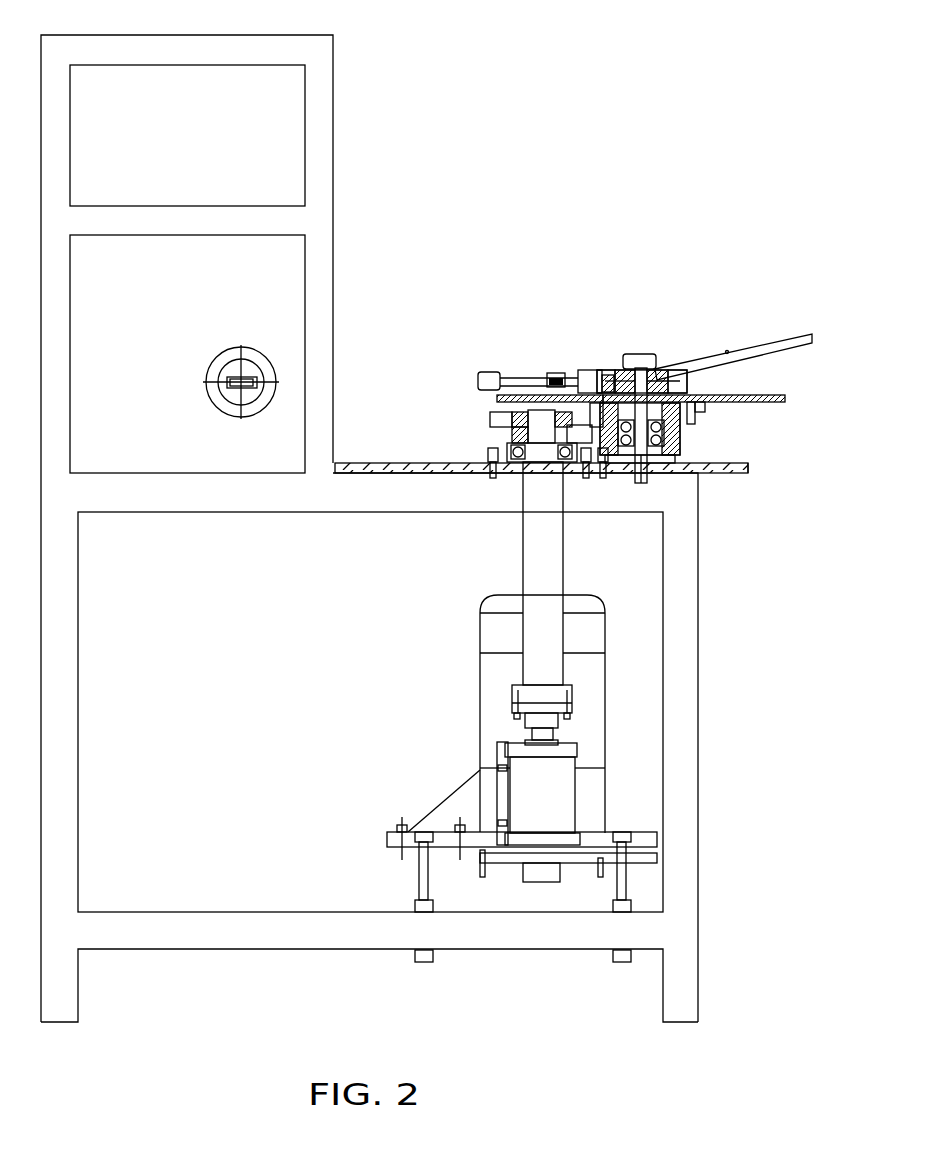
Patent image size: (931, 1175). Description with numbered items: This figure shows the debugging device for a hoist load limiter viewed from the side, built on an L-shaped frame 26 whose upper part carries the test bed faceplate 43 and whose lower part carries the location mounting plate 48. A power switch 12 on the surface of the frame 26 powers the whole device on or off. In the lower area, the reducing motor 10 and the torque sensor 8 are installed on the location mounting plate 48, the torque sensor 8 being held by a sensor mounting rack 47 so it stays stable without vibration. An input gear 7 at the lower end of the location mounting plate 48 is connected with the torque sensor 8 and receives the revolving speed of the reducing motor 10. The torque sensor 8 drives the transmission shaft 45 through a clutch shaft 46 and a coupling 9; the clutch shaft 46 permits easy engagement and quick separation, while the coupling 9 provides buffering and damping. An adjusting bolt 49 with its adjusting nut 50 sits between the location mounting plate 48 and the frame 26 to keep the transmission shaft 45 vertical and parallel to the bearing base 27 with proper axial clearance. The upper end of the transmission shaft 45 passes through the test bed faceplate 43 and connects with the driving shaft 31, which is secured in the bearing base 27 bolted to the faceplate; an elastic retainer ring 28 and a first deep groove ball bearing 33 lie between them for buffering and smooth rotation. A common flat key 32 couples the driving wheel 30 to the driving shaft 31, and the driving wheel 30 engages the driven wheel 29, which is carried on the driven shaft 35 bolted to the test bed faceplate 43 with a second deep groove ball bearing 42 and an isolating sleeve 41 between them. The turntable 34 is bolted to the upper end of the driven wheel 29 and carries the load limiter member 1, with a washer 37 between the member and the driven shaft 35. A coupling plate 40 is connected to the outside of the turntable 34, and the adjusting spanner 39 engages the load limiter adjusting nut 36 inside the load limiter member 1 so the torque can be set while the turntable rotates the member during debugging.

The load limiter member 1 is at (727, 352).
The input gear 7 is at (535, 862).
The torque sensor 8 is at (525, 763).
The coupling 9 is at (548, 697).
The reducing motor 10 is at (483, 652).
The power switch 12 is at (238, 380).
The frame 26 is at (305, 135).
The bearing base 27 is at (490, 450).
The elastic retainer ring 28 is at (515, 443).
The driven wheel 29 is at (640, 447).
The driving wheel 30 is at (528, 428).
The driving shaft 31 is at (530, 415).
The common flat key 32 is at (555, 427).
The first deep groove ball bearing 33 is at (565, 405).
The turntable 34 is at (617, 372).
The driven shaft 35 is at (642, 372).
The load limiter adjusting nut 36 is at (655, 378).
The washer 37 is at (663, 385).
The adjusting spanner 39 is at (692, 410).
The coupling plate 40 is at (708, 398).
The isolating sleeve 41 is at (700, 413).
The second deep groove ball bearing 42 is at (665, 442).
The test bed faceplate 43 is at (753, 473).
The transmission shaft 45 is at (545, 558).
The clutch shaft 46 is at (552, 715).
The sensor mounting rack 47 is at (465, 803).
The location mounting plate 48 is at (563, 848).
The adjusting bolt 49 is at (420, 872).
The adjusting nut 50 is at (420, 905).